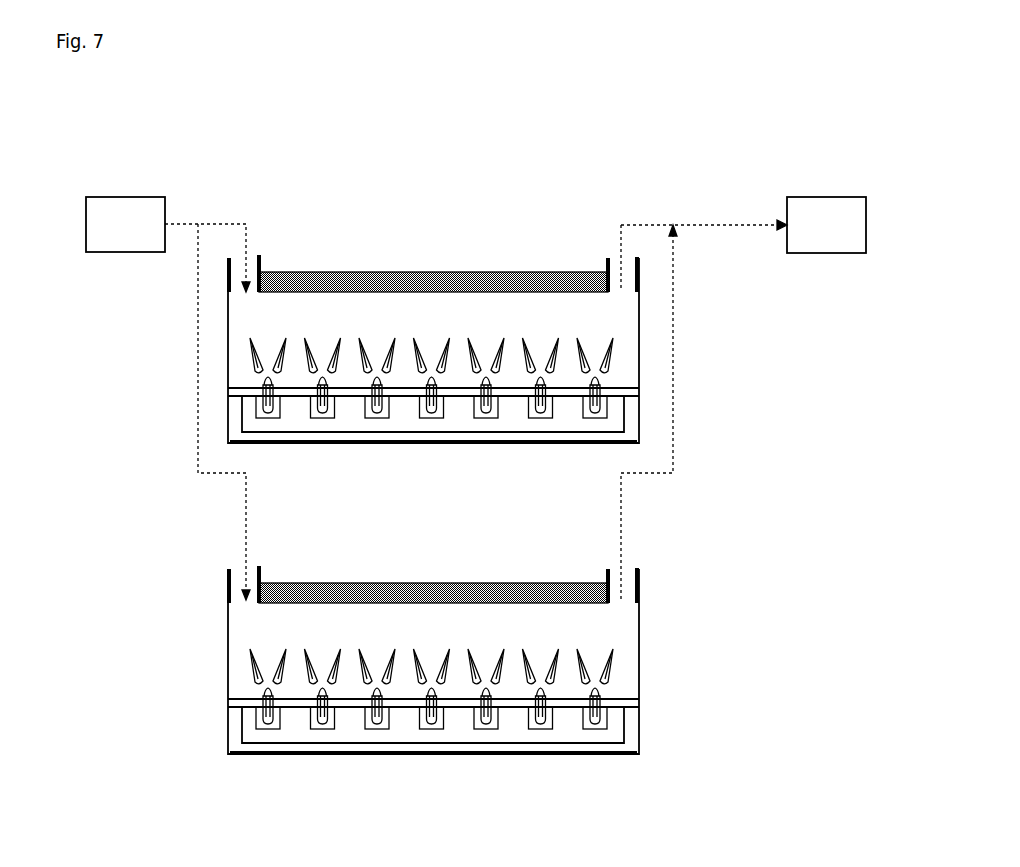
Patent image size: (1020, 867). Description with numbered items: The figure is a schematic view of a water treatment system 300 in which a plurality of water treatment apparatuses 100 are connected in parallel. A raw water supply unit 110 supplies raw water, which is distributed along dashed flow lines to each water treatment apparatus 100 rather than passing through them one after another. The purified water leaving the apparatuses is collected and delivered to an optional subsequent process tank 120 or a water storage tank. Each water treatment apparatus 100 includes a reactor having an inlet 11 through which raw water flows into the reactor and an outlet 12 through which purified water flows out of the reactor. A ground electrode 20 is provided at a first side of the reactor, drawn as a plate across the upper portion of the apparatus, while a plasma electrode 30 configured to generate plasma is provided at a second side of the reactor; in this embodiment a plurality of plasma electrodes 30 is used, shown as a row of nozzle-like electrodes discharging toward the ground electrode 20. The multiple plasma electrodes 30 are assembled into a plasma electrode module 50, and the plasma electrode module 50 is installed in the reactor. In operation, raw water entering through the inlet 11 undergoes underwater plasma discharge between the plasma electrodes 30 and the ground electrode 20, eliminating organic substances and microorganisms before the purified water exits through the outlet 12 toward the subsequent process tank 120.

The water treatment system 300 is at (687, 100).
The raw water supply unit 110 is at (124, 197).
The subsequent process tank 120 is at (826, 197).
The water treatment apparatus 100 is at (639, 326).
The ground electrode 20 is at (555, 272).
The inlet 11 is at (260, 257).
The outlet 12 is at (608, 258).
The plasma electrode 30 is at (605, 405).
The plasma electrode module 50 is at (352, 443).